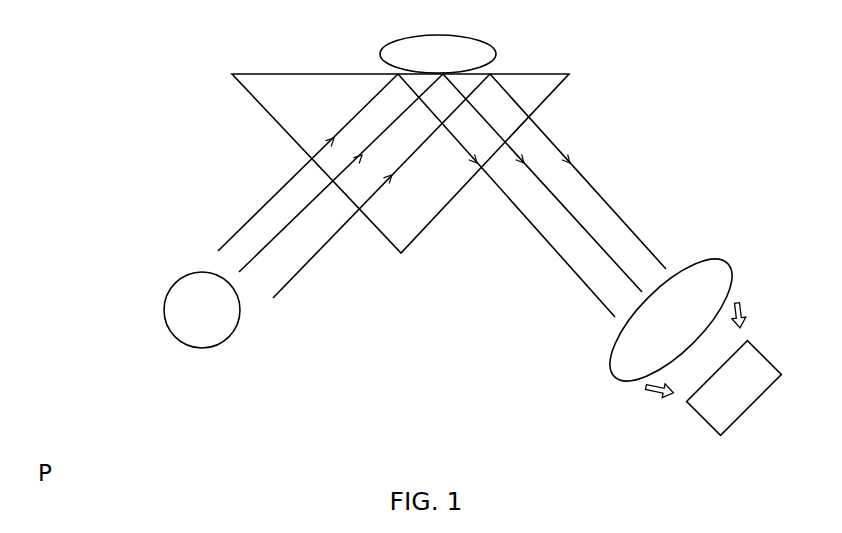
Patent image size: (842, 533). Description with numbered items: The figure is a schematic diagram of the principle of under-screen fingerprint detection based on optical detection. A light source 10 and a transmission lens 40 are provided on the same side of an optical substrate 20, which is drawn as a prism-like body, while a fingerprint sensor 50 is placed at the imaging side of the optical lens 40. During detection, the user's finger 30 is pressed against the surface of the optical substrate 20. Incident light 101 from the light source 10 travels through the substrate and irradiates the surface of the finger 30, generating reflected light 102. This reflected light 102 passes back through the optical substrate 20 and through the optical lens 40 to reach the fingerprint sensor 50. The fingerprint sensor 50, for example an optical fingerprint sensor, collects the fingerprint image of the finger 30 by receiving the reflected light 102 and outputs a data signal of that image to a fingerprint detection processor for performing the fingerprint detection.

The light source 10 is at (163, 323).
The optical substrate 20 is at (280, 73).
The finger 30 is at (497, 53).
The transmission lens 40 is at (615, 378).
The fingerprint sensor 50 is at (703, 420).
The incident light 101 is at (305, 182).
The reflected light 102 is at (583, 193).